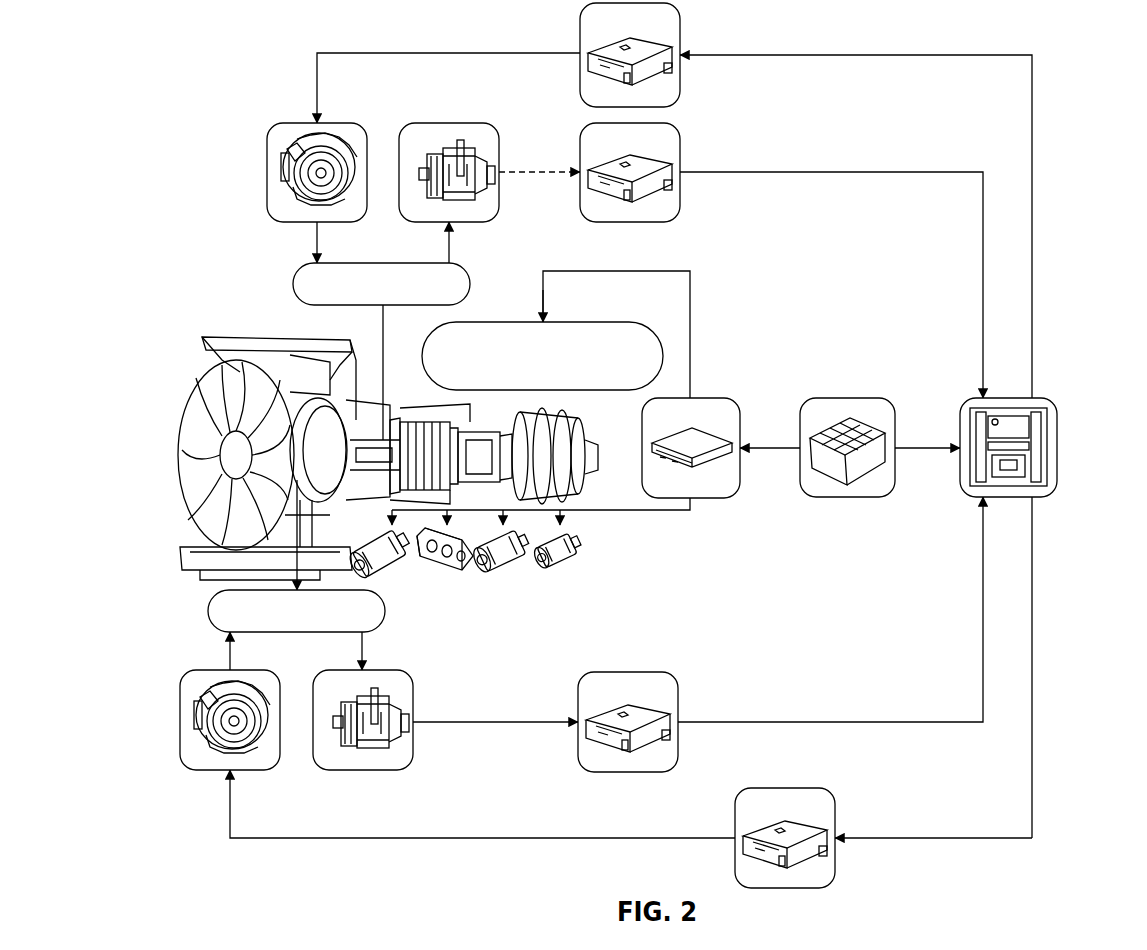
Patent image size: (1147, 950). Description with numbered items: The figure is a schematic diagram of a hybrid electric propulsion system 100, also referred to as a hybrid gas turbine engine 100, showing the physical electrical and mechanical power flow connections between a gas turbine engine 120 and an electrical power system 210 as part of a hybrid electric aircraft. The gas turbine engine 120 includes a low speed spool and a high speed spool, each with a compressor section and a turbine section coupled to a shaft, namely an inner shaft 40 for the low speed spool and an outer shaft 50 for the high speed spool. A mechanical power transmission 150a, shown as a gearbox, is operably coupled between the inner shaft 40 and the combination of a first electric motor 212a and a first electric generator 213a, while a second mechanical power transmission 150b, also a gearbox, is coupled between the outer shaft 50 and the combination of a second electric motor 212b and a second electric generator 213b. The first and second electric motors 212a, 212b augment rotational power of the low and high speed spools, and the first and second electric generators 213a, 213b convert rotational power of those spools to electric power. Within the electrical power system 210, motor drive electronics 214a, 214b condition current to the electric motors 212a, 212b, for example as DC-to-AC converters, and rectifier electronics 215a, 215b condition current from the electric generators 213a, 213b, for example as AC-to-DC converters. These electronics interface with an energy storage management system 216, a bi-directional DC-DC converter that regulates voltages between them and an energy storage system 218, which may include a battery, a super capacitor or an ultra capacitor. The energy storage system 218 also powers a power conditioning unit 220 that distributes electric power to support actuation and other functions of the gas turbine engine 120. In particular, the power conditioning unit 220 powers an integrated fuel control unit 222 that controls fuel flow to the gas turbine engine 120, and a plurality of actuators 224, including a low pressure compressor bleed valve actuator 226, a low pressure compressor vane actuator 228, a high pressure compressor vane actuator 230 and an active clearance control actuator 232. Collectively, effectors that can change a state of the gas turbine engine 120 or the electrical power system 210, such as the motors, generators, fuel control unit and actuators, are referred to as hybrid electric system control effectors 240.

The hybrid electric propulsion system 100 is at (176, 78).
The gas turbine engine 120 is at (179, 378).
The inner shaft 40 is at (218, 488).
The outer shaft 50 is at (388, 428).
The mechanical power transmission 150a is at (212, 594).
The mechanical power transmission 150b is at (300, 267).
The electrical power system 210 is at (507, 254).
The first electric motor 212a is at (215, 672).
The second electric motor 212b is at (293, 122).
The first electric generator 213a is at (382, 672).
The second electric generator 213b is at (436, 122).
The motor drive electronics 214a is at (785, 790).
The motor drive electronics 214b is at (580, 48).
The rectifier electronics 215a is at (628, 672).
The rectifier electronics 215b is at (680, 184).
The energy storage management system 216 is at (1057, 441).
The energy storage system 218 is at (845, 398).
The power conditioning unit 220 is at (700, 398).
The integrated fuel control unit 222 is at (577, 322).
The actuators 224 is at (636, 546).
The low pressure compressor bleed valve actuator 226 is at (396, 566).
The low pressure compressor vane actuator 228 is at (466, 572).
The high pressure compressor vane actuator 230 is at (505, 563).
The active clearance control actuator 232 is at (561, 562).
The hybrid electric system control effectors 240 is at (778, 257).